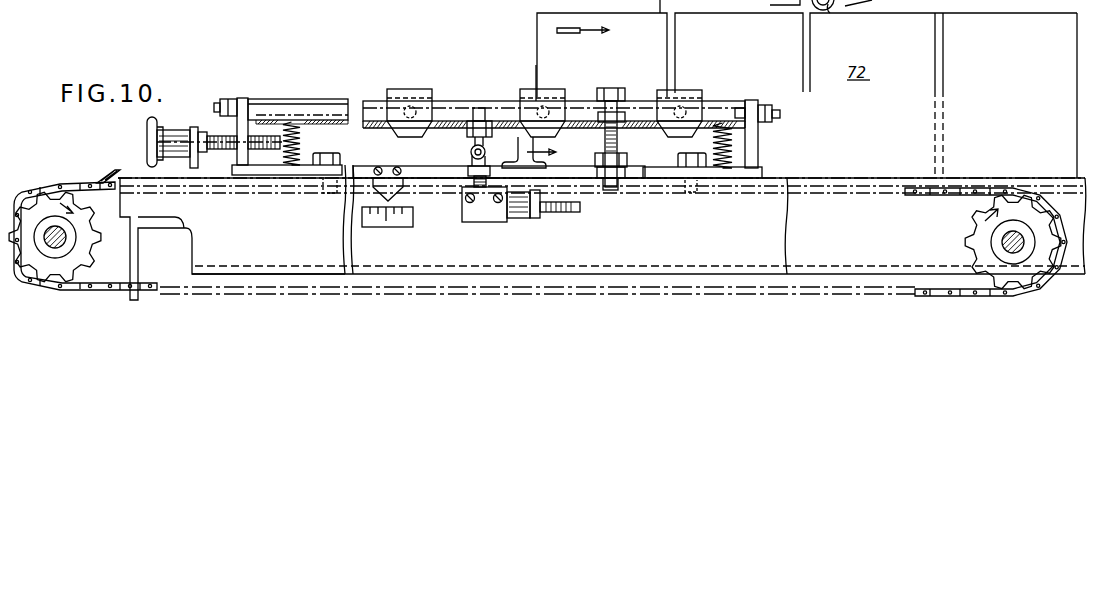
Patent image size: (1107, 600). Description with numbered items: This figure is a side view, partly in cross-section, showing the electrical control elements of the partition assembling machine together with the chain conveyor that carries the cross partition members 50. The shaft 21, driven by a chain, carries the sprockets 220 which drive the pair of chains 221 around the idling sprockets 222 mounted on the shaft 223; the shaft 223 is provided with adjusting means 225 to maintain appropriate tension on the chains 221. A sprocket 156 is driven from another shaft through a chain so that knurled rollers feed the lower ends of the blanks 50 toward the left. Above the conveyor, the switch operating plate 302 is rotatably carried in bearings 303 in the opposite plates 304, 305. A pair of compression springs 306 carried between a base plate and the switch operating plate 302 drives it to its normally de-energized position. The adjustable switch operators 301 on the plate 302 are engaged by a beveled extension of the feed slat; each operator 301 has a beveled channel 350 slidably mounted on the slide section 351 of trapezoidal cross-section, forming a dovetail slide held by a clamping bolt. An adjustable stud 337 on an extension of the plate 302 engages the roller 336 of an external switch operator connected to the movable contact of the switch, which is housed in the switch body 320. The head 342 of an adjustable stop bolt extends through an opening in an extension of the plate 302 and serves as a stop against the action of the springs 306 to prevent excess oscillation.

The shaft 21 is at (1010, 249).
The cross partition members 50 is at (945, 50).
The sprocket 156 is at (830, 14).
The sprockets 220 is at (975, 237).
The chains 221 is at (110, 293).
The idling sprockets 222 is at (63, 277).
The shaft 223 is at (45, 248).
The adjusting means 225 is at (230, 138).
The adjustable switch operators 301 is at (428, 84).
The switch operating plate 302 is at (455, 112).
The bearings 303 is at (262, 90).
The plate 304 is at (776, 106).
The plate 305 is at (238, 99).
The compression springs 306 is at (299, 148).
The switch housing 320 is at (490, 216).
The roller 336 is at (471, 153).
The adjustable stud 337 is at (468, 137).
The head 342 is at (624, 79).
The beveled channel 350 is at (318, 88).
The slide section 351 is at (503, 100).